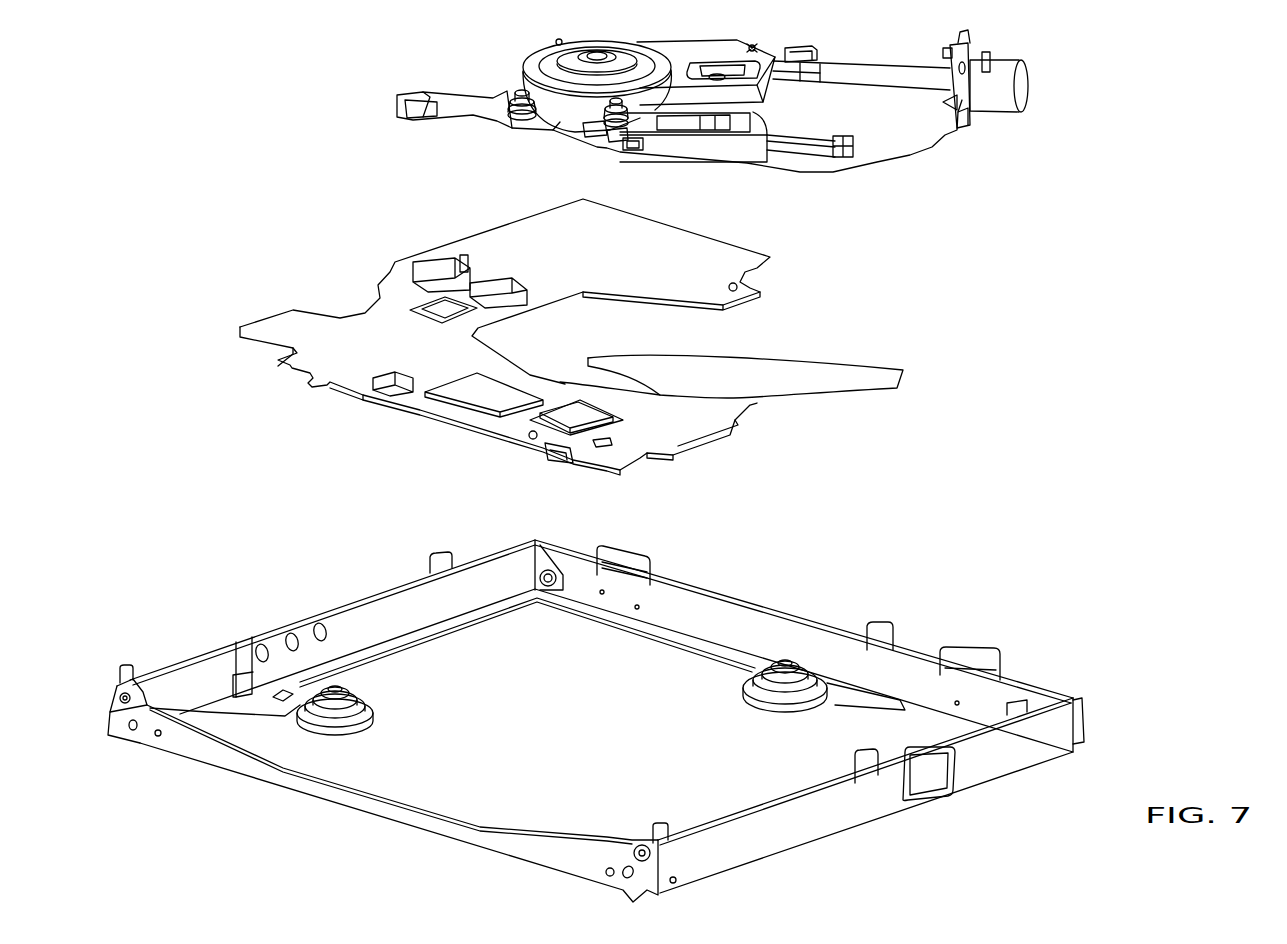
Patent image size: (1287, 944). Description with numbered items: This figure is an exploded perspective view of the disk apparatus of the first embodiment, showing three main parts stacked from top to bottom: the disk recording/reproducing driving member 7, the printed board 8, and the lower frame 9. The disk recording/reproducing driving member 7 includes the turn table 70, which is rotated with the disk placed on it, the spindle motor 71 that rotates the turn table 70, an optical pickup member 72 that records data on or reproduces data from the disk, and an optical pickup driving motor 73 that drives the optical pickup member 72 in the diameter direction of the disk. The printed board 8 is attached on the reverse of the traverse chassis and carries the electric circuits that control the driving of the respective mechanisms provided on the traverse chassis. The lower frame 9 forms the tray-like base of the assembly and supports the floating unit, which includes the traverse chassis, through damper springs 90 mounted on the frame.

The disk recording/reproducing driving member 7 is at (777, 124).
The turn table 70 is at (525, 55).
The spindle motor 71 is at (553, 117).
The optical pickup member 72 is at (746, 116).
The optical pickup driving motor 73 is at (1007, 94).
The printed board 8 is at (770, 275).
The lower frame 9 is at (626, 716).
The damper springs 90 is at (338, 688).